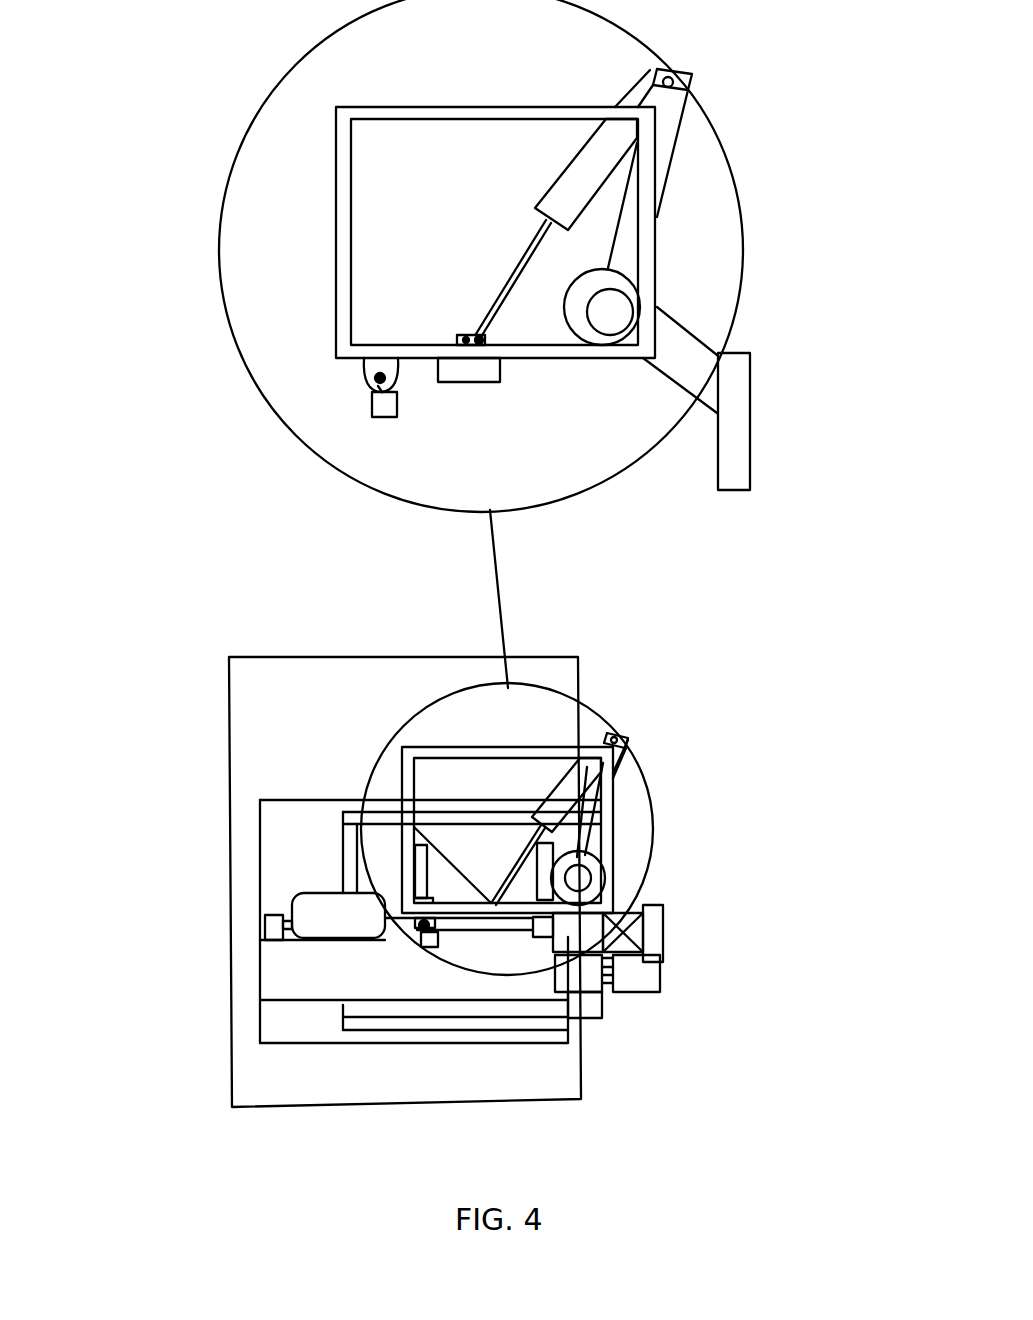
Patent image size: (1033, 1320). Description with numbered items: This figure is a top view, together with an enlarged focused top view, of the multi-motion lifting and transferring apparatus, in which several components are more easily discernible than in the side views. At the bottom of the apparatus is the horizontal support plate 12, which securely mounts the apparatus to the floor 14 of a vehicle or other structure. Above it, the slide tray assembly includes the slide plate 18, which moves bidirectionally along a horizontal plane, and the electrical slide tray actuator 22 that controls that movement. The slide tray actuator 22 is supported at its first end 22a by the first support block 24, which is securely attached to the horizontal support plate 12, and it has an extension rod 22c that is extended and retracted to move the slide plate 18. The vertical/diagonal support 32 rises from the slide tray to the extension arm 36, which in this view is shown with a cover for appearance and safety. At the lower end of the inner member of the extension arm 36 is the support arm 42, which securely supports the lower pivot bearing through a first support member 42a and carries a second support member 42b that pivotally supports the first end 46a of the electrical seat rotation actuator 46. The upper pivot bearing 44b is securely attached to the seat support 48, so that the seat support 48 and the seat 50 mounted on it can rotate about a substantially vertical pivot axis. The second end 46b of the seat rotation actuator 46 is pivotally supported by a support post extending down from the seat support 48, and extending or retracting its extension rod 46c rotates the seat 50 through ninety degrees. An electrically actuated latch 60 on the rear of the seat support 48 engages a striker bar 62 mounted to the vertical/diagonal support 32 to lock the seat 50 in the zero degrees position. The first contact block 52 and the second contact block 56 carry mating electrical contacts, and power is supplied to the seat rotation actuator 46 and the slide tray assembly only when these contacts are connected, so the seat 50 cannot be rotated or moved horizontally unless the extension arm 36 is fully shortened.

The horizontal support plate 12 is at (285, 1028).
The floor 14 is at (425, 1087).
The slide plate 18 is at (585, 1007).
The slide tray actuator 22 is at (322, 906).
The first end 22a is at (265, 917).
The extension rod 22c is at (460, 923).
The first support block 24 is at (265, 930).
The vertical/diagonal support 32 is at (378, 400).
The extension arm 36 is at (350, 980).
The support arm 42 is at (732, 402).
The first support member 42a is at (675, 340).
The second support member 42b is at (673, 113).
The upper pivot bearing 44b is at (613, 868).
The seat rotation actuator 46 is at (568, 185).
The first end 46a is at (648, 87).
The second end 46b is at (400, 815).
The extension rod 46c is at (507, 283).
The seat support 48 is at (336, 230).
The seat 50 is at (500, 722).
The first contact block 52 is at (585, 972).
The second contact block 56 is at (632, 972).
The electrically actuated latch 60 is at (372, 378).
The striker bar 62 is at (390, 383).